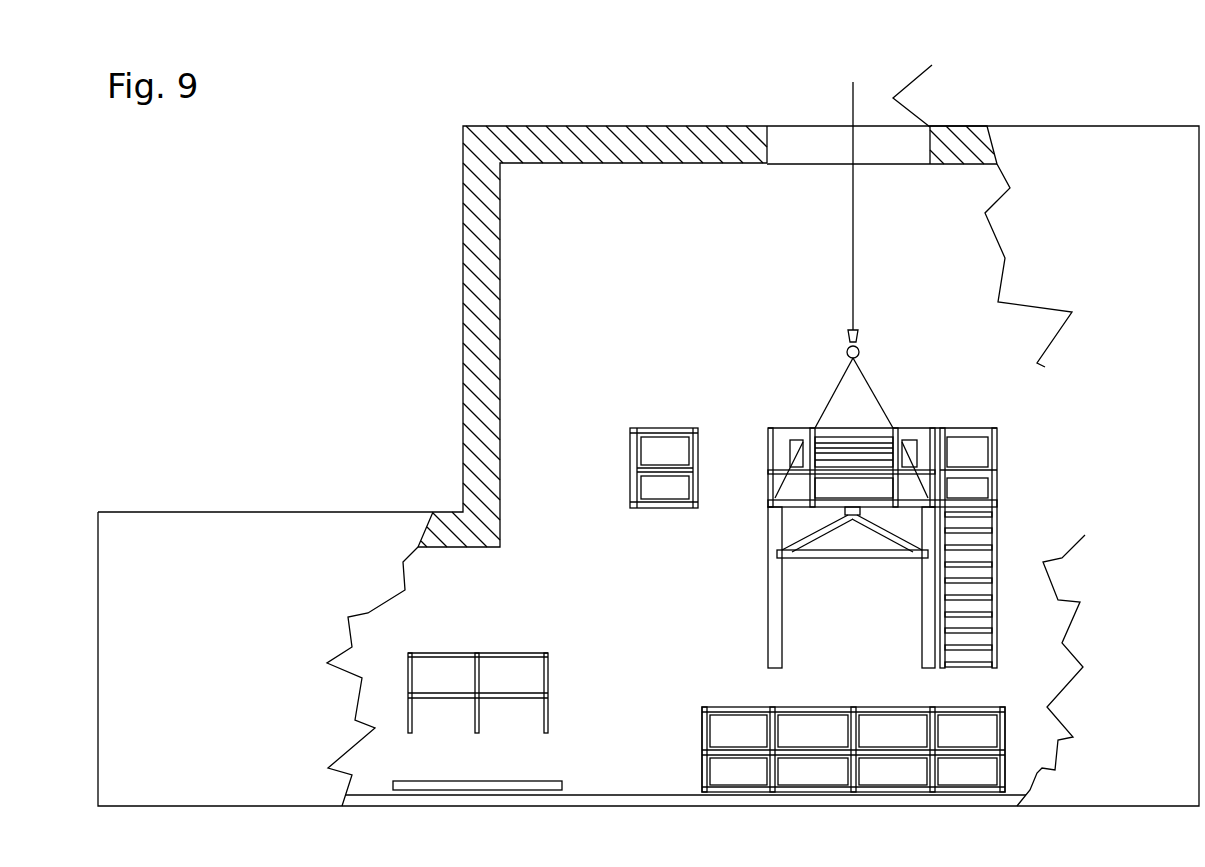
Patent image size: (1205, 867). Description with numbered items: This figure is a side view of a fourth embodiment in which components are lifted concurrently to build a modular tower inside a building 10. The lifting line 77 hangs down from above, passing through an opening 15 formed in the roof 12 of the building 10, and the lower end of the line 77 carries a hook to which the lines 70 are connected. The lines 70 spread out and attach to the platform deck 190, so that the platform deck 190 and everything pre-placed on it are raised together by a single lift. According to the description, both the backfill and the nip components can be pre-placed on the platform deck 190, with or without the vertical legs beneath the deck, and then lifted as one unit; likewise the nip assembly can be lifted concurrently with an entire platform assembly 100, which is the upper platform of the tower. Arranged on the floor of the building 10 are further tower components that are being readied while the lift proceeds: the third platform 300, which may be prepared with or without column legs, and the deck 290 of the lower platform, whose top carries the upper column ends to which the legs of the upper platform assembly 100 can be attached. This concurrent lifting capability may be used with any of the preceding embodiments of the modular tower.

The building 10 is at (557, 336).
The roof 12 is at (633, 104).
The opening 15 is at (932, 65).
The line 77 is at (800, 206).
The lines 70 is at (807, 378).
The platform deck 190 is at (1014, 548).
The platform assembly 100 is at (970, 525).
The third platform 300 is at (570, 631).
The deck 290 is at (801, 749).